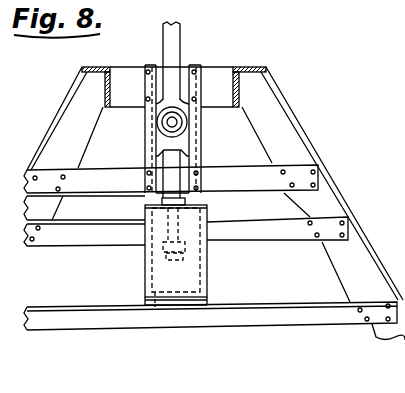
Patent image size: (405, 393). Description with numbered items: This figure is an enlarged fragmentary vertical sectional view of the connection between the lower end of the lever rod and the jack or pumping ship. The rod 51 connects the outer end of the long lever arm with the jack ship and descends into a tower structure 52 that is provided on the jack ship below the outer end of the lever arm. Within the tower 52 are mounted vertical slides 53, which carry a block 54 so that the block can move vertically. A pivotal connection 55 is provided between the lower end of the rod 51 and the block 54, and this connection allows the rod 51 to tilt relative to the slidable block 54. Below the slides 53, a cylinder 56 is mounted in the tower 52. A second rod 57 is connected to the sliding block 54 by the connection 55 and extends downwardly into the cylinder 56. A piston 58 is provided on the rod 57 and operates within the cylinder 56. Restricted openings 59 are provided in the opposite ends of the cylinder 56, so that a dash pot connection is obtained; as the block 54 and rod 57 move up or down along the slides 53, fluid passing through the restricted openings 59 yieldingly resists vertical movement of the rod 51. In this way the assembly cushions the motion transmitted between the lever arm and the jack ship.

The rod 51 is at (170, 38).
The tower structure 52 is at (287, 131).
The vertical slides 53 is at (198, 133).
The block 54 is at (165, 142).
The pivotal connection 55 is at (159, 127).
The cylinder 56 is at (205, 263).
The rod 57 is at (176, 178).
The piston 58 is at (147, 260).
The restricted openings 59 is at (155, 308).